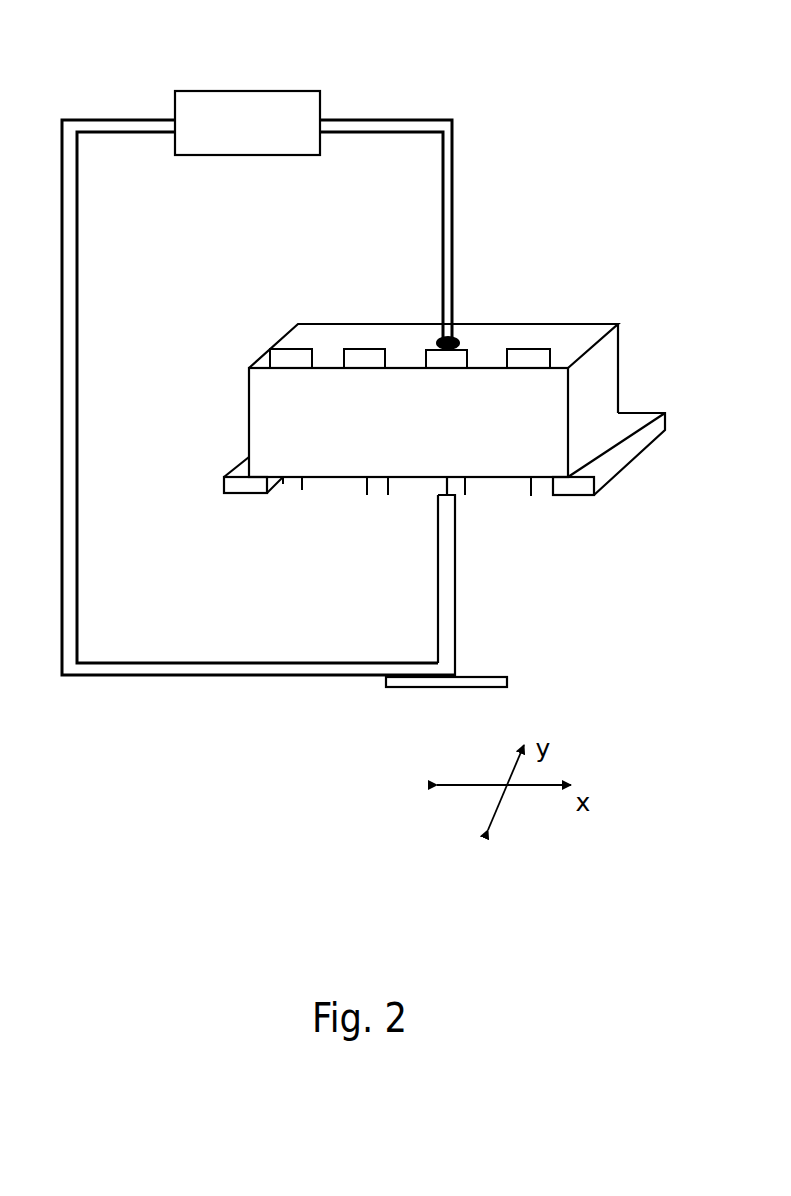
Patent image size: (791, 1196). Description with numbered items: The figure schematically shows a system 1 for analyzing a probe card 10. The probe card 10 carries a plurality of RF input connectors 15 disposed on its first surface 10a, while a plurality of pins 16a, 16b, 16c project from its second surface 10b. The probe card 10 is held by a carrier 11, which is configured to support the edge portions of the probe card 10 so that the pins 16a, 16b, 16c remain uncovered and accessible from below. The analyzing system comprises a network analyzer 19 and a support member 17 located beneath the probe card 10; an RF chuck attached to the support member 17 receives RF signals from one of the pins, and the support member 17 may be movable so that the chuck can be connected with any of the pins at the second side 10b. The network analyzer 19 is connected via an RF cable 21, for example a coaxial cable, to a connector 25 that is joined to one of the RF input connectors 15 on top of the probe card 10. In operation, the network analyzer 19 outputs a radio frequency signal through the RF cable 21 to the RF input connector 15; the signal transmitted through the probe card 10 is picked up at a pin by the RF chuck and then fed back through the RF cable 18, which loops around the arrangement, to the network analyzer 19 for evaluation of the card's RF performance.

The system 1 is at (319, 745).
The probe card 10 is at (438, 446).
The first surface 10a is at (258, 362).
The second surface 10b is at (490, 477).
The carrier 11 is at (630, 437).
The RF input connectors 15 is at (527, 348).
The pin 16a is at (283, 484).
The pin 16b is at (302, 490).
The pin 16c is at (367, 495).
The support member 17 is at (507, 682).
The RF cable 18 is at (160, 677).
The network analyzer 19 is at (228, 97).
The RF cable 21 is at (406, 120).
The connector 25 is at (440, 338).